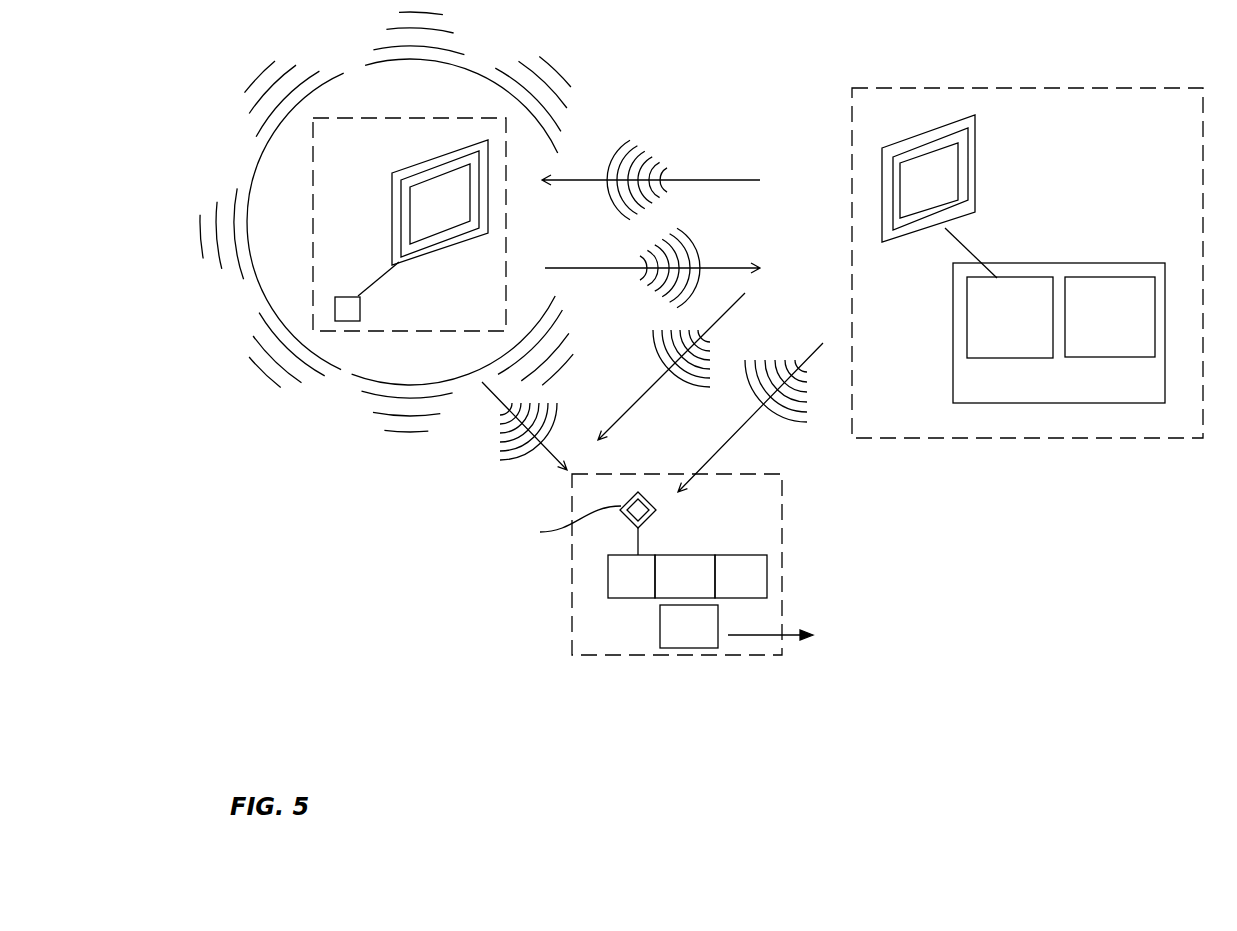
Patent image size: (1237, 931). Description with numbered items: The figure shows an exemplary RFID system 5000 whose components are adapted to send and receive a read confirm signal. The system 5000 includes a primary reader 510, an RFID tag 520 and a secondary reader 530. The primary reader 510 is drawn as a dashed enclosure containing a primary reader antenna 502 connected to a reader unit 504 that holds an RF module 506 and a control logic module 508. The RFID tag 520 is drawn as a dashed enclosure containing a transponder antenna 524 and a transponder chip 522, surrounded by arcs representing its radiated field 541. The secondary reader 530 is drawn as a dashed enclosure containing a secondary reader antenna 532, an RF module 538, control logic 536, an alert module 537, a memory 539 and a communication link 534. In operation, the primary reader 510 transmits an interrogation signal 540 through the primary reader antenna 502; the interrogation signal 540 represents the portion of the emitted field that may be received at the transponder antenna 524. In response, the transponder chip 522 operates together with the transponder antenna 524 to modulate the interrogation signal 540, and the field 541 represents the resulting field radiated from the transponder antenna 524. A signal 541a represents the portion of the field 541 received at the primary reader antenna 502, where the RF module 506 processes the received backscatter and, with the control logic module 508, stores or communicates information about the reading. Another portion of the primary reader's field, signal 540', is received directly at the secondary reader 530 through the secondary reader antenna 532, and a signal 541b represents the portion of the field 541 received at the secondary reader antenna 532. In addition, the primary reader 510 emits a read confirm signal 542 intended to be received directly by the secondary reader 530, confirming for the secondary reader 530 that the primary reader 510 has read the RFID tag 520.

The RFID system 5000 is at (701, 379).
The RFID tag 520 is at (312, 226).
The transponder chip 522 is at (345, 295).
The transponder antenna 524 is at (391, 187).
The field 541 is at (266, 393).
The interrogation signal 540 is at (651, 182).
The signal 541a is at (559, 266).
The signal 540' is at (671, 367).
The read confirm signal 542 is at (717, 456).
The signal 541b is at (484, 386).
The primary reader 510 is at (921, 86).
The primary reader antenna 502 is at (977, 121).
The reader unit 504 is at (952, 298).
The RF module 506 is at (1007, 360).
The control logic module 508 is at (1117, 360).
The secondary reader 530 is at (783, 563).
The secondary reader antenna 532 is at (543, 519).
The communication link 534 is at (757, 638).
The control logic 536 is at (685, 553).
The alert module 537 is at (747, 553).
The RF module 538 is at (628, 600).
The memory 539 is at (689, 650).